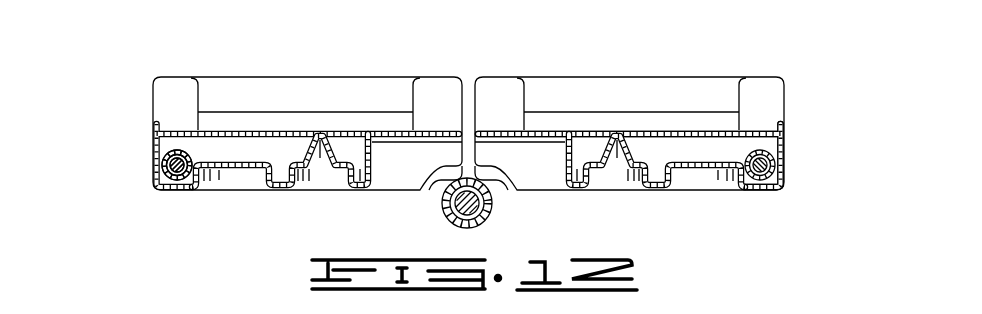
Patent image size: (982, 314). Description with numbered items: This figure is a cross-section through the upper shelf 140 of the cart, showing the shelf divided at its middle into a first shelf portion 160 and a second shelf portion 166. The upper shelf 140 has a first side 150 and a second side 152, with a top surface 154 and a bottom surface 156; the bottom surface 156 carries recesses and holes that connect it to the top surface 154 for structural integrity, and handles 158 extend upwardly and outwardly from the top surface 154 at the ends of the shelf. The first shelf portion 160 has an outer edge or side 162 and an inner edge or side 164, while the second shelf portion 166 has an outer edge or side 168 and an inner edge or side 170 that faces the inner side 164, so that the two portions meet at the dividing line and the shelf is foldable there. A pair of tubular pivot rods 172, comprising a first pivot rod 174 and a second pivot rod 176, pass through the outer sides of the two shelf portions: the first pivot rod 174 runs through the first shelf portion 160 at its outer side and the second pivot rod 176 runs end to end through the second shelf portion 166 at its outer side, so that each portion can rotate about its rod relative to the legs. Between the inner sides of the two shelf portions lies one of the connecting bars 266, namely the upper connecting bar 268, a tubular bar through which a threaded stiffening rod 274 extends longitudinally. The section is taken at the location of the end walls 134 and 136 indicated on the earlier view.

The first end wall 134 is at (679, 155).
The second end wall 136 is at (114, 166).
The upper shelf 140 is at (307, 102).
The first side 150 is at (782, 160).
The second side 152 is at (166, 161).
The top surface 154 is at (592, 92).
The bottom surface 156 is at (281, 190).
The handles 158 is at (300, 92).
The first shelf portion 160 is at (767, 92).
The outer edge or side 162 is at (782, 130).
The inner edge or side 164 is at (518, 178).
The second shelf portion 166 is at (172, 85).
The outer edge or side 168 is at (155, 132).
The inner edge or side 170 is at (420, 187).
The pivot rods 172 is at (454, 188).
The first pivot rod 174 is at (762, 187).
The second pivot rod 176 is at (160, 183).
The connecting bars 266 is at (519, 214).
The upper connecting bar 268 is at (478, 222).
The threaded stiffening rod 274 is at (497, 214).